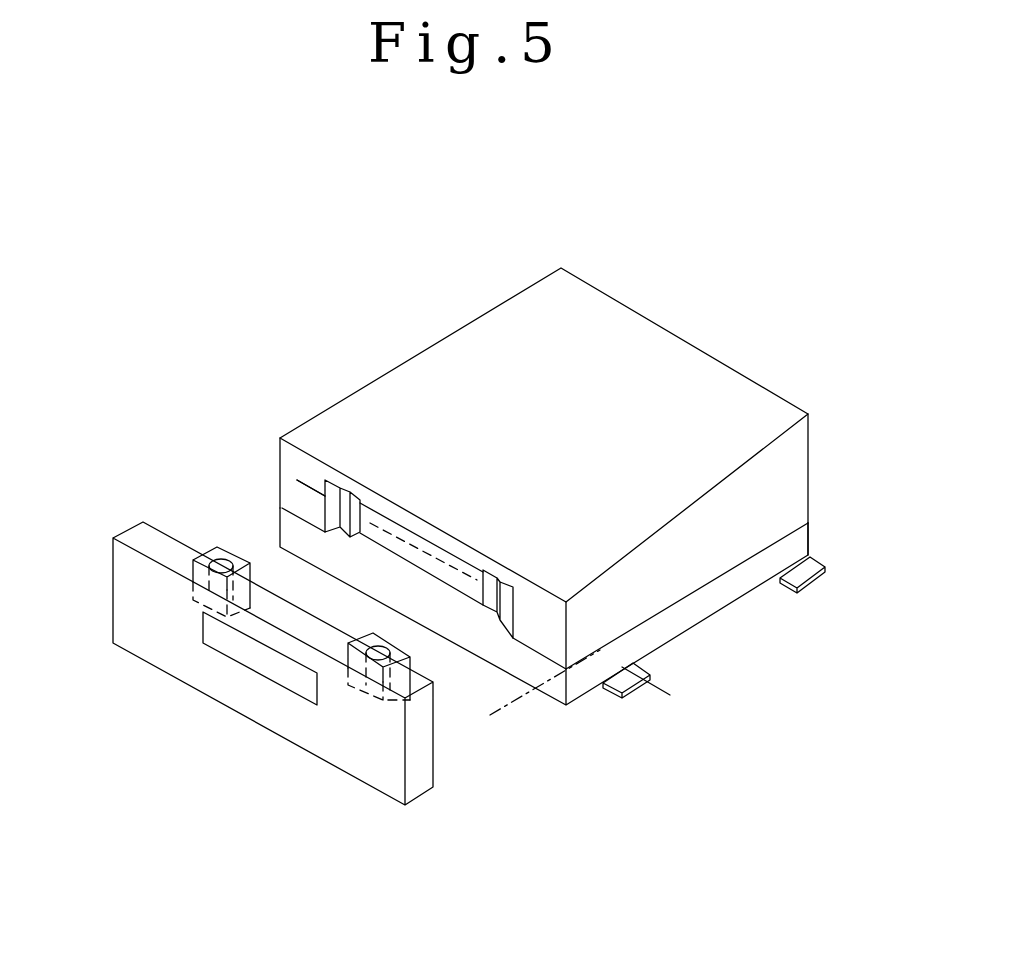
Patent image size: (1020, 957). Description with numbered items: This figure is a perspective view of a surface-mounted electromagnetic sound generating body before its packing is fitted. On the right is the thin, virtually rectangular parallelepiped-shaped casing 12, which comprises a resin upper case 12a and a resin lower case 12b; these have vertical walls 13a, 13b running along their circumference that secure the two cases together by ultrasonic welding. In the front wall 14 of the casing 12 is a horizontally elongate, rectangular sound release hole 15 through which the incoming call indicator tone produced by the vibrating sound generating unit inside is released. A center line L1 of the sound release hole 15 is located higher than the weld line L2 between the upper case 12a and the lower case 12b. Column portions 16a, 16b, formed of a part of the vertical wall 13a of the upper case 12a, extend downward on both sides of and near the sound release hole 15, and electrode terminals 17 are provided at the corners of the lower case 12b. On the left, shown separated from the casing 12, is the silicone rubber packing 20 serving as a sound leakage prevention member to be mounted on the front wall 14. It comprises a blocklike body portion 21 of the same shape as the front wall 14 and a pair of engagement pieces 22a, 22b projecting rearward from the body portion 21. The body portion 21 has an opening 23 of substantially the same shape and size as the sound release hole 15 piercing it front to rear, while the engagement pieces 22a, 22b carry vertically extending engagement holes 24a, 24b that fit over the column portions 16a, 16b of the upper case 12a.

The casing 12 is at (562, 502).
The upper case 12a is at (765, 397).
The lower case 12b is at (720, 612).
The vertical wall 13a is at (802, 492).
The vertical wall 13b is at (803, 543).
The front wall 14 is at (293, 497).
The sound release hole 15 is at (405, 530).
The column portion 16a is at (347, 505).
The column portion 16b is at (483, 577).
The electrode terminal 17 is at (622, 697).
The packing 20 is at (257, 656).
The body portion 21 is at (337, 765).
The engagement piece 22a is at (199, 547).
The engagement piece 22b is at (395, 640).
The opening 23 is at (267, 662).
The engagement hole 24a is at (227, 557).
The engagement hole 24b is at (377, 650).
The center line L1 is at (669, 691).
The weld line L2 is at (529, 696).